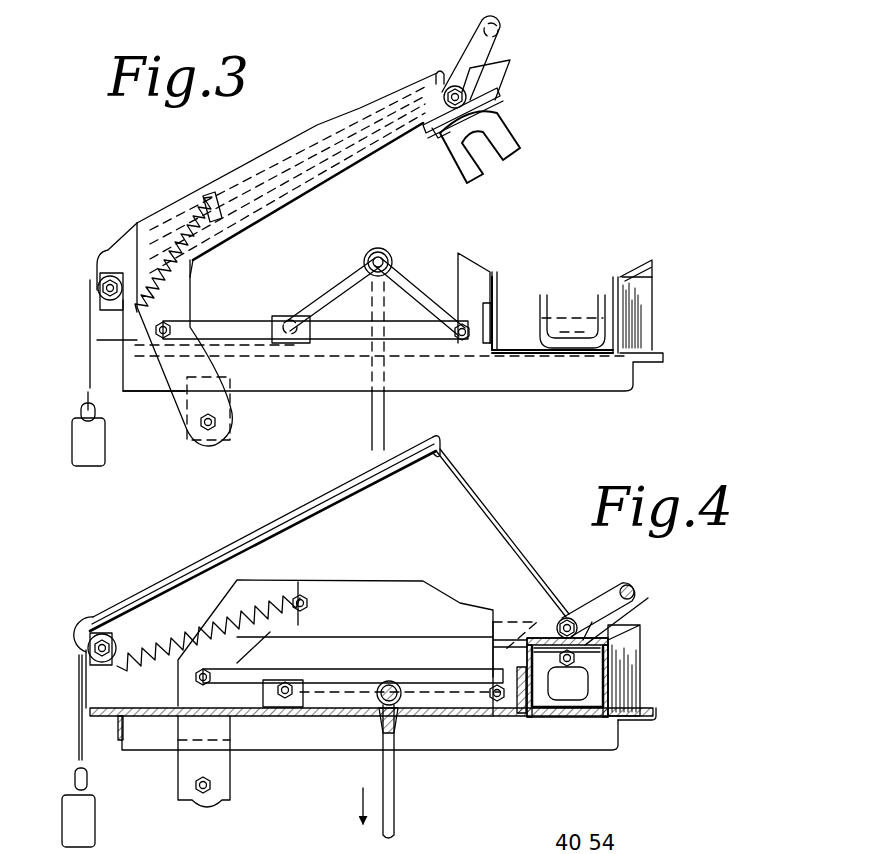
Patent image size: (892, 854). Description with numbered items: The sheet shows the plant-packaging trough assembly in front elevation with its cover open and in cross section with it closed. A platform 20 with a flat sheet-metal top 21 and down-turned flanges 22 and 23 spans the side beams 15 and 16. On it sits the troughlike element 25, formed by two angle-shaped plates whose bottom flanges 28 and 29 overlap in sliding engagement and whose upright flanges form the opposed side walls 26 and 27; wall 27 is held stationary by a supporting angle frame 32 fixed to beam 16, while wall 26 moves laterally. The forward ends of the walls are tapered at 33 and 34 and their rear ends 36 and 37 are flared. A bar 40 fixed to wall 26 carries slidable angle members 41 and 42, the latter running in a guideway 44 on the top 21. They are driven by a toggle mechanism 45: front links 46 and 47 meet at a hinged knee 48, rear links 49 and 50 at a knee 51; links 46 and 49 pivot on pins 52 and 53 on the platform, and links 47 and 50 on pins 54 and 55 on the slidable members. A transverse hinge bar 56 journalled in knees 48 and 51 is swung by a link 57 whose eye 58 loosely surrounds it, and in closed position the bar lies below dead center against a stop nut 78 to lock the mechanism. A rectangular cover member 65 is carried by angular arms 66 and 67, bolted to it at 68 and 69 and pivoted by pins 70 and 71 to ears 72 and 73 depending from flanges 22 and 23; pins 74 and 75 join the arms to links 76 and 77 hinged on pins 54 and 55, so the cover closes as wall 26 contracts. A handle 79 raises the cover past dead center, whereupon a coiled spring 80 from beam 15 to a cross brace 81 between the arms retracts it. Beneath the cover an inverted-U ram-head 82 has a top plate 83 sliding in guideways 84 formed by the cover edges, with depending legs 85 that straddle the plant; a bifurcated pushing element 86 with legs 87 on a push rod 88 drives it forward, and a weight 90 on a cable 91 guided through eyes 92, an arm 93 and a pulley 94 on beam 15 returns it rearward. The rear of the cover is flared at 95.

In FIG. 3, the side beam 15 is at (126, 386).
In FIG. 4, the side beam 15 is at (119, 745).
In FIG. 3, the side beam 16 is at (635, 377).
In FIG. 4, the side beam 16 is at (627, 748).
In FIG. 3, the platform 20 is at (533, 373).
In FIG. 4, the platform 20 is at (452, 742).
In FIG. 3, the platform top 21 is at (335, 358).
In FIG. 4, the platform top 21 is at (243, 710).
In FIG. 3, the front flange 22 is at (587, 382).
In FIG. 4, the side flange 23 is at (370, 733).
In FIG. 3, the troughlike element 25 is at (620, 271).
In FIG. 4, the troughlike element 25 is at (622, 655).
In FIG. 3, the side wall 26 is at (458, 272).
In FIG. 4, the side wall 26 is at (500, 647).
In FIG. 3, the side wall 27 is at (622, 277).
In FIG. 4, the side wall 27 is at (610, 663).
In FIG. 3, the bottom flange 28 is at (509, 347).
In FIG. 4, the bottom flange 28 is at (568, 683).
In FIG. 3, the bottom flange 29 is at (550, 353).
In FIG. 4, the bottom flange 29 is at (585, 716).
In FIG. 3, the supporting angle frame 32 is at (653, 347).
In FIG. 4, the supporting angle frame 32 is at (657, 721).
In FIG. 3, the tapered forward end 33 is at (496, 295).
In FIG. 3, the tapered forward end 34 is at (615, 285).
In FIG. 3, the rear end 36 is at (478, 263).
In FIG. 4, the rear end 36 is at (497, 640).
In FIG. 3, the rear end 37 is at (650, 260).
In FIG. 4, the rear end 37 is at (637, 635).
In FIG. 3, the bar 40 is at (483, 318).
In FIG. 4, the bar 40 is at (522, 678).
In FIG. 3, the slidable member 41 is at (477, 350).
In FIG. 4, the slidable member 42 is at (522, 713).
In FIG. 4, the guideway 44 is at (415, 715).
In FIG. 3, the toggle mechanism 45 is at (340, 274).
In FIG. 4, the toggle mechanism 45 is at (396, 674).
In FIG. 3, the front link 46 is at (312, 310).
In FIG. 3, the front link 47 is at (407, 283).
In FIG. 3, the hinged knee 48 is at (369, 252).
In FIG. 4, the rear link 49 is at (350, 687).
In FIG. 4, the rear link 50 is at (472, 668).
In FIG. 4, the hinged knee 51 is at (375, 707).
In FIG. 3, the pin 52 is at (285, 315).
In FIG. 4, the pin 53 is at (290, 680).
In FIG. 3, the pivot pin 54 is at (460, 342).
In FIG. 4, the pivot pin 55 is at (493, 703).
In FIG. 4, the hinge bar 56 is at (385, 710).
In FIG. 3, the link 57 is at (395, 390).
In FIG. 4, the link 57 is at (395, 824).
In FIG. 3, the eye 58 is at (384, 254).
In FIG. 4, the eye 58 is at (396, 688).
In FIG. 3, the cover member 65 is at (458, 88).
In FIG. 4, the cover member 65 is at (527, 640).
In FIG. 3, the arm 66 is at (282, 152).
In FIG. 4, the arm 67 is at (362, 617).
In FIG. 3, the bolt 68 is at (498, 89).
In FIG. 4, the bolt 69 is at (568, 616).
In FIG. 3, the pin 70 is at (200, 428).
In FIG. 4, the pin 71 is at (194, 786).
In FIG. 3, the ear 72 is at (232, 393).
In FIG. 4, the ear 73 is at (222, 762).
In FIG. 3, the pin 74 is at (172, 325).
In FIG. 4, the pin 75 is at (192, 680).
In FIG. 3, the link 76 is at (228, 320).
In FIG. 4, the link 77 is at (255, 676).
In FIG. 4, the stop nut 78 is at (397, 740).
In FIG. 3, the handle 79 is at (500, 20).
In FIG. 4, the handle 79 is at (634, 583).
In FIG. 3, the coiled spring 80 is at (192, 264).
In FIG. 4, the coiled spring 80 is at (160, 660).
In FIG. 3, the cross brace 81 is at (213, 192).
In FIG. 4, the cross brace 81 is at (305, 590).
In FIG. 3, the ram-head 82 is at (521, 141).
In FIG. 4, the ram-head 82 is at (600, 682).
In FIG. 3, the top plate 83 is at (500, 98).
In FIG. 4, the top plate 83 is at (584, 638).
In FIG. 3, the guideway 84 is at (438, 138).
In FIG. 4, the guideway 84 is at (543, 637).
In FIG. 3, the depending legs 85 is at (466, 176).
In FIG. 4, the depending legs 85 is at (605, 703).
In FIG. 3, the ram pushing element 86 is at (568, 310).
In FIG. 3, the legs 87 is at (572, 321).
In FIG. 3, the push rod 88 is at (640, 310).
In FIG. 4, the push rod 88 is at (572, 722).
In FIG. 3, the weight 90 is at (74, 466).
In FIG. 4, the weight 90 is at (63, 832).
In FIG. 3, the cable 91 is at (90, 350).
In FIG. 4, the cable 91 is at (292, 542).
In FIG. 3, the eyes 92 is at (437, 77).
In FIG. 4, the eyes 92 is at (441, 445).
In FIG. 3, the arm 93 is at (120, 250).
In FIG. 4, the arm 93 is at (196, 565).
In FIG. 3, the pulley 94 is at (98, 282).
In FIG. 4, the pulley 94 is at (88, 650).
In FIG. 3, the flared rear portion 95 is at (490, 72).
In FIG. 4, the flared rear portion 95 is at (645, 597).